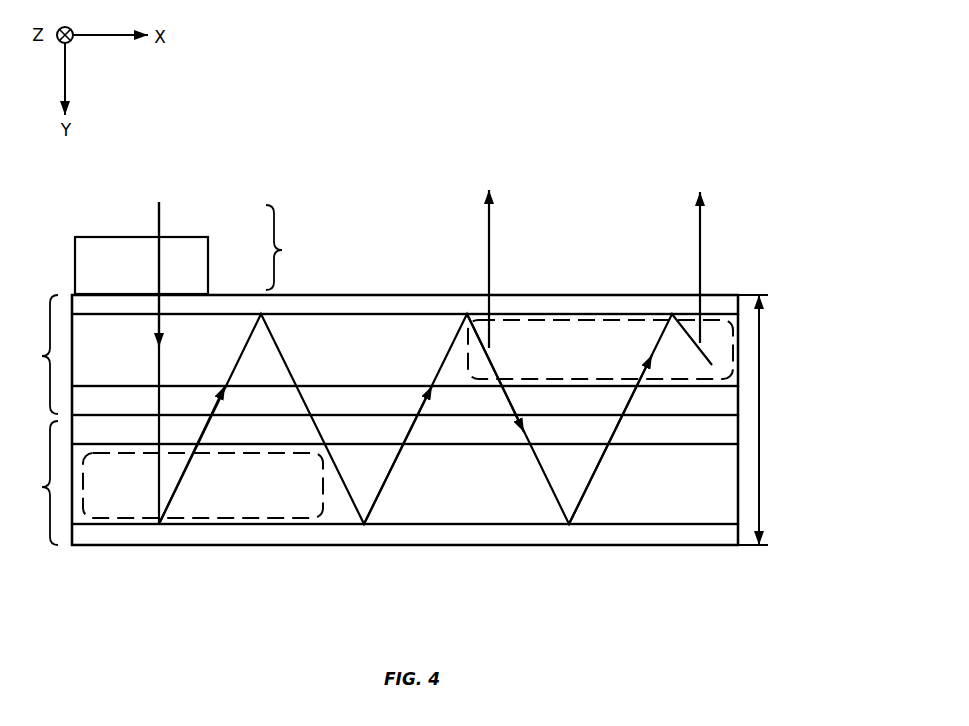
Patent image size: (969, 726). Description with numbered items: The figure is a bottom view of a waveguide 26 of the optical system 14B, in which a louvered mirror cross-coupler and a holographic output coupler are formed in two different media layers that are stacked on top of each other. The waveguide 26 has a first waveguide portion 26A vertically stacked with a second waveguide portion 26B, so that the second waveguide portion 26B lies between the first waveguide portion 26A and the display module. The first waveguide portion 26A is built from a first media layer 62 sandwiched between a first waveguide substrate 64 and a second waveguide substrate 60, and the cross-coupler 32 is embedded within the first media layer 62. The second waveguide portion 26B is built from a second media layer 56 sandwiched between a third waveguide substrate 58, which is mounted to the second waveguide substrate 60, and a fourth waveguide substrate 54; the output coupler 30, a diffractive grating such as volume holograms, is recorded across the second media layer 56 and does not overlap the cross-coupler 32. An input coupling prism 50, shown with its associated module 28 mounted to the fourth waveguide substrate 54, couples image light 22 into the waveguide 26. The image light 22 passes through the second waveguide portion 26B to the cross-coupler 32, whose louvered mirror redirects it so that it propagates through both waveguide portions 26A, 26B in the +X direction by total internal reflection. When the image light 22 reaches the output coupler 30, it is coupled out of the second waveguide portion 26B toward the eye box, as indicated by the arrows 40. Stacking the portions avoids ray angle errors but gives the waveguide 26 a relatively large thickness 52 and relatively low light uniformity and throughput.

The optical system 14B is at (651, 96).
The waveguide 26 is at (594, 214).
The first waveguide portion 26A is at (30, 483).
The second waveguide portion 26B is at (29, 354).
The image light 22 is at (163, 205).
The light source module 28 is at (288, 247).
The input coupling prism 50 is at (210, 240).
The output coupler 30 is at (588, 318).
The cross-coupler 32 is at (137, 520).
The arrows 40 is at (491, 232).
The thickness 52 is at (762, 417).
The fourth waveguide substrate 54 is at (330, 300).
The second media layer 56 is at (358, 322).
The third waveguide substrate 58 is at (365, 400).
The second waveguide substrate 60 is at (490, 438).
The first media layer 62 is at (434, 513).
The first waveguide substrate 64 is at (385, 535).